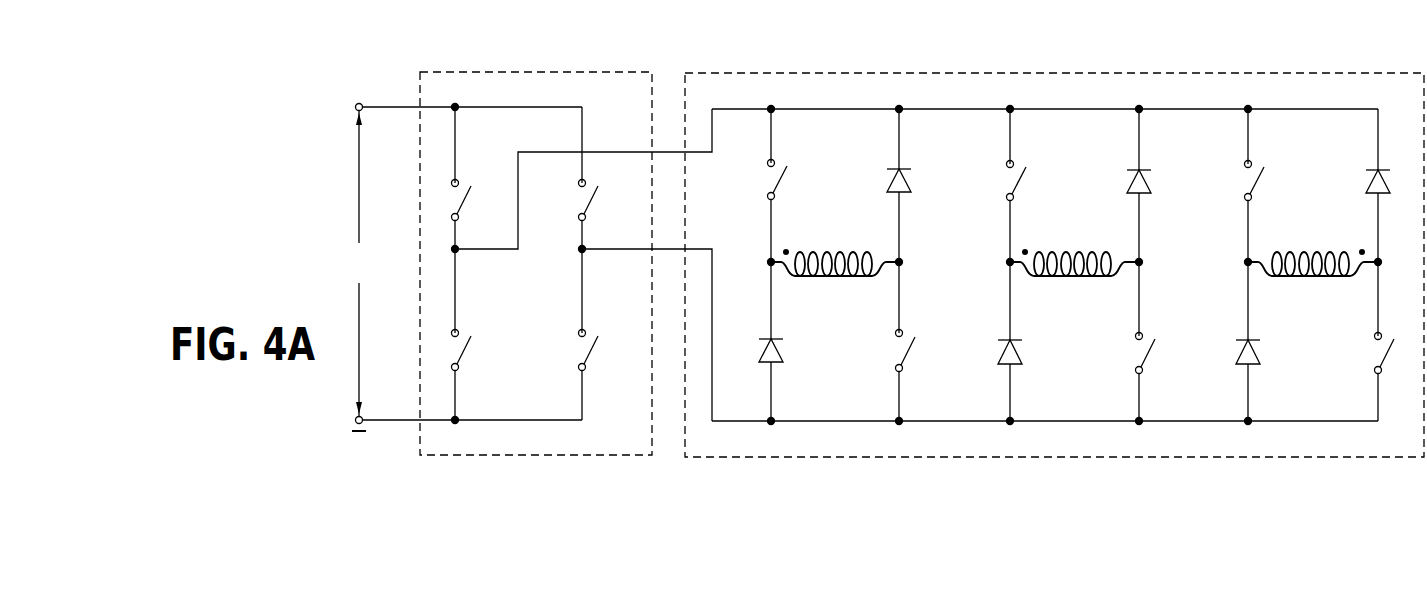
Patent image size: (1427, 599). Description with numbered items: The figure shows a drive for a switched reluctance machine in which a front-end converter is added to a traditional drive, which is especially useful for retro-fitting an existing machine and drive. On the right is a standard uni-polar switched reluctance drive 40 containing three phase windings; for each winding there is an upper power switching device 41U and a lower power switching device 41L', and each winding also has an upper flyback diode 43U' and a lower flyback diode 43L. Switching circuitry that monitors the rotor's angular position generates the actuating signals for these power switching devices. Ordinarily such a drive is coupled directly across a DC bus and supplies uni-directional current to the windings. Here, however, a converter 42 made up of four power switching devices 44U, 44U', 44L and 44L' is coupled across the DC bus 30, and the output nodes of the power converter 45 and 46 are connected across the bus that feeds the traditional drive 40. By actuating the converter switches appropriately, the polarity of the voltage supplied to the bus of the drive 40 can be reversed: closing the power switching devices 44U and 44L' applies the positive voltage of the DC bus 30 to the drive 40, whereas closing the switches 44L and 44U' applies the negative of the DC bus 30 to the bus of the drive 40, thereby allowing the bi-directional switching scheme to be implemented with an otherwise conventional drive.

The DC bus 30 is at (331, 237).
The switched reluctance drive 40 is at (924, 68).
The converter 42 is at (549, 65).
The power switching device 44U is at (477, 179).
The power switching device 44L is at (478, 365).
The power switching device 44U' is at (608, 211).
The power switching device 44L' is at (605, 365).
The output node of the power converter 45 is at (462, 246).
The output node of the power converter 46 is at (579, 184).
The upper power switching device 41U is at (786, 180).
The lower power switching device 41L' is at (925, 365).
The upper flyback diode 43U' is at (923, 166).
The lower flyback diode 43L is at (803, 338).